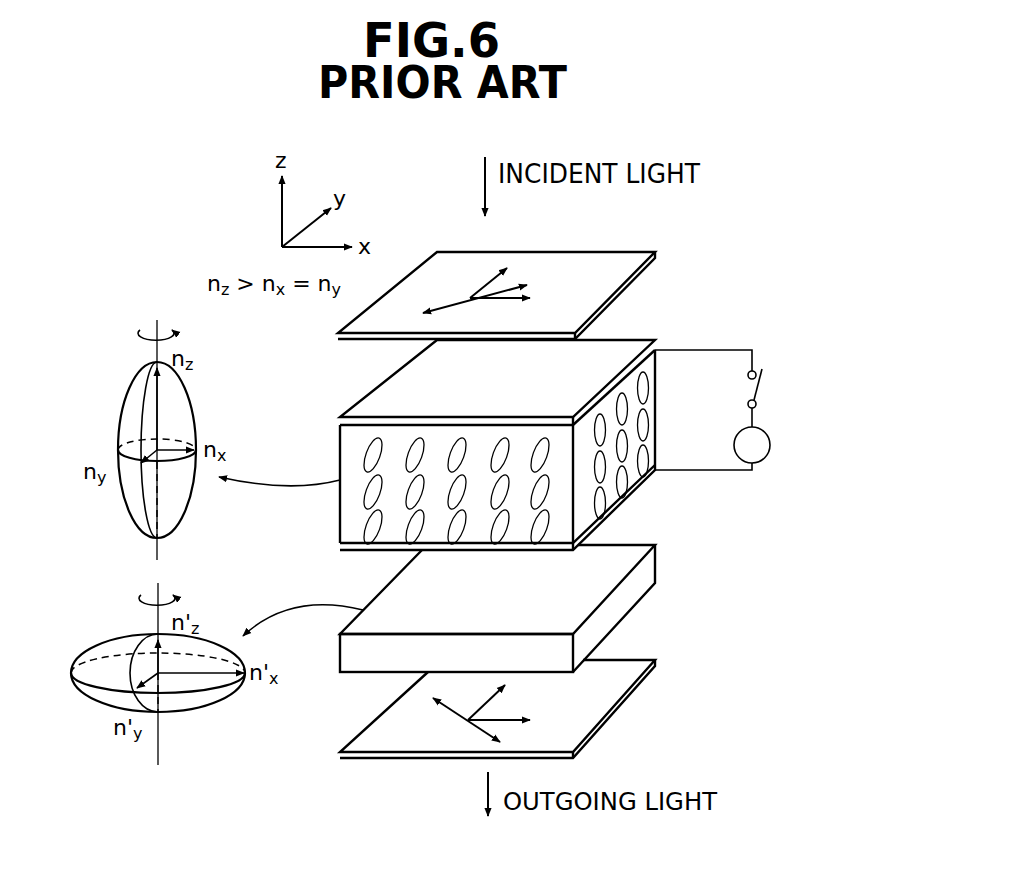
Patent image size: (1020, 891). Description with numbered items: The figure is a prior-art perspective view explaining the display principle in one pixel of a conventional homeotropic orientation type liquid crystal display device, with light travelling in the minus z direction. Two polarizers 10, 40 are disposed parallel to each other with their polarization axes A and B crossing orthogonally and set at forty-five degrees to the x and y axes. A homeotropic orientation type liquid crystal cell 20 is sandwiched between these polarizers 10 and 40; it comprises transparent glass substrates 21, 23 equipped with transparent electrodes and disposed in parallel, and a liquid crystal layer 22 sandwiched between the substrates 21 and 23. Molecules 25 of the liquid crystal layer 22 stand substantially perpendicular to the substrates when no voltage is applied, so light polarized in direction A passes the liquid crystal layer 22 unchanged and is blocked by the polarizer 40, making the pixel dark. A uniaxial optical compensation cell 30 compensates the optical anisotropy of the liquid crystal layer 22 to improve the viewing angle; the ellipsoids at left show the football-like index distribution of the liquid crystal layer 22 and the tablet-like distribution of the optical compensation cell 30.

The polarizer 10 is at (637, 251).
The homeotropic orientation type liquid crystal cell 20 is at (553, 418).
The transparent glass substrate 21 is at (618, 348).
The liquid crystal layer 22 is at (496, 448).
The transparent glass substrate 23 is at (637, 485).
The molecules of the liquid crystal 25 is at (367, 458).
The uniaxial optical compensation cell 30 is at (658, 558).
The polarizer 40 is at (641, 677).